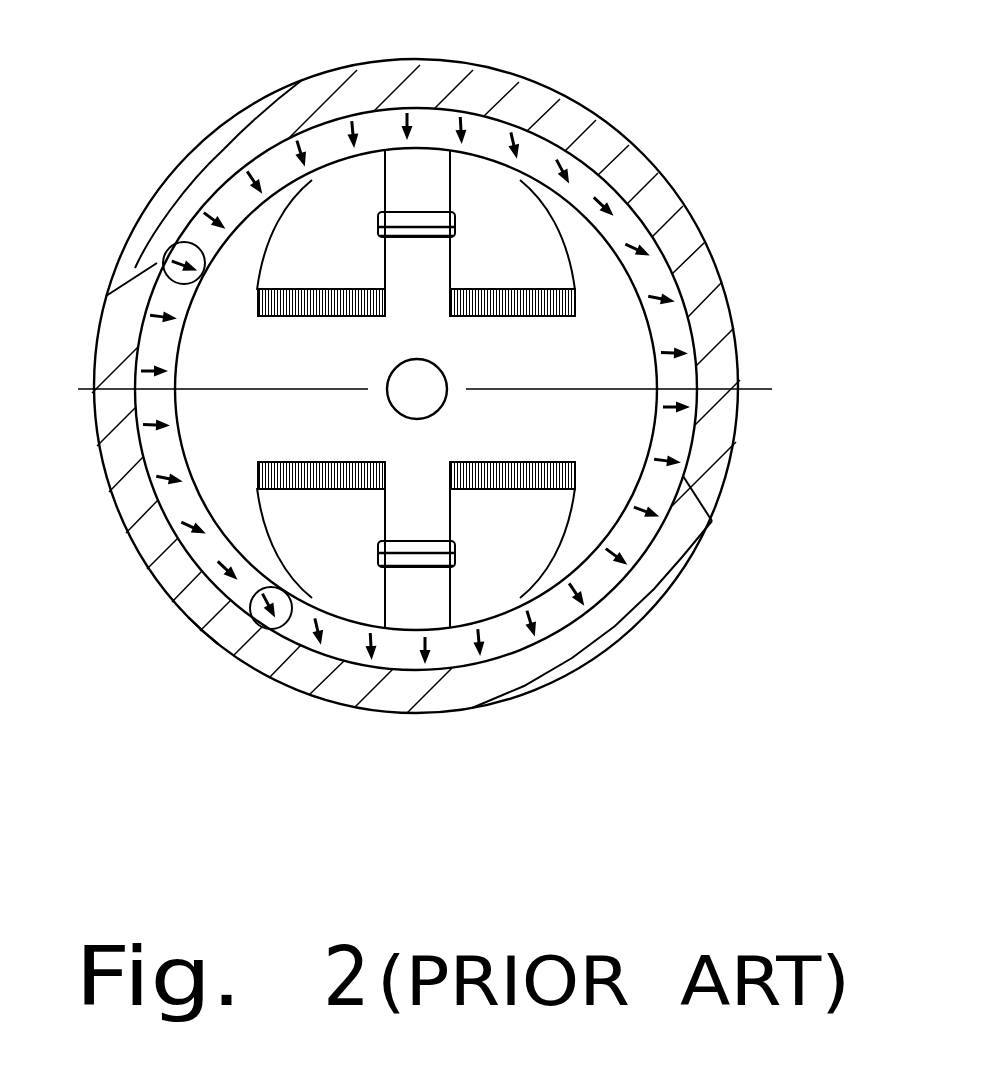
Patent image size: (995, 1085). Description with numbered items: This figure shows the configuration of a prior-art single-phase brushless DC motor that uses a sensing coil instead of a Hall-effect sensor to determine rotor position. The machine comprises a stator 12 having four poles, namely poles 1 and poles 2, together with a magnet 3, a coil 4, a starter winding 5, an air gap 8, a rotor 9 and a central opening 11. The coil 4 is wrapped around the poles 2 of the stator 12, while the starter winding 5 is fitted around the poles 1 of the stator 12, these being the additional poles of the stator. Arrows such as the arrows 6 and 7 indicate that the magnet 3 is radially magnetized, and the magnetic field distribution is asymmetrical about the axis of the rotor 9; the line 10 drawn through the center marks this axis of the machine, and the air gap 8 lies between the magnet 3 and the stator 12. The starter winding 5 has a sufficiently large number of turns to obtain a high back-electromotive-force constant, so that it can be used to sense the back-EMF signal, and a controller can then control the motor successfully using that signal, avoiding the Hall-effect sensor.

The pole 1 is at (530, 106).
The pole 2 is at (622, 352).
The magnet 3 is at (677, 489).
The coil 4 is at (292, 288).
The starter winding 5 is at (407, 215).
The arrow 6 is at (104, 297).
The arrow 7 is at (216, 643).
The air gap 8 is at (453, 164).
The rotor 9 is at (660, 560).
The axis line 10 is at (757, 397).
The opening 11 is at (412, 374).
The stator 12 is at (547, 373).